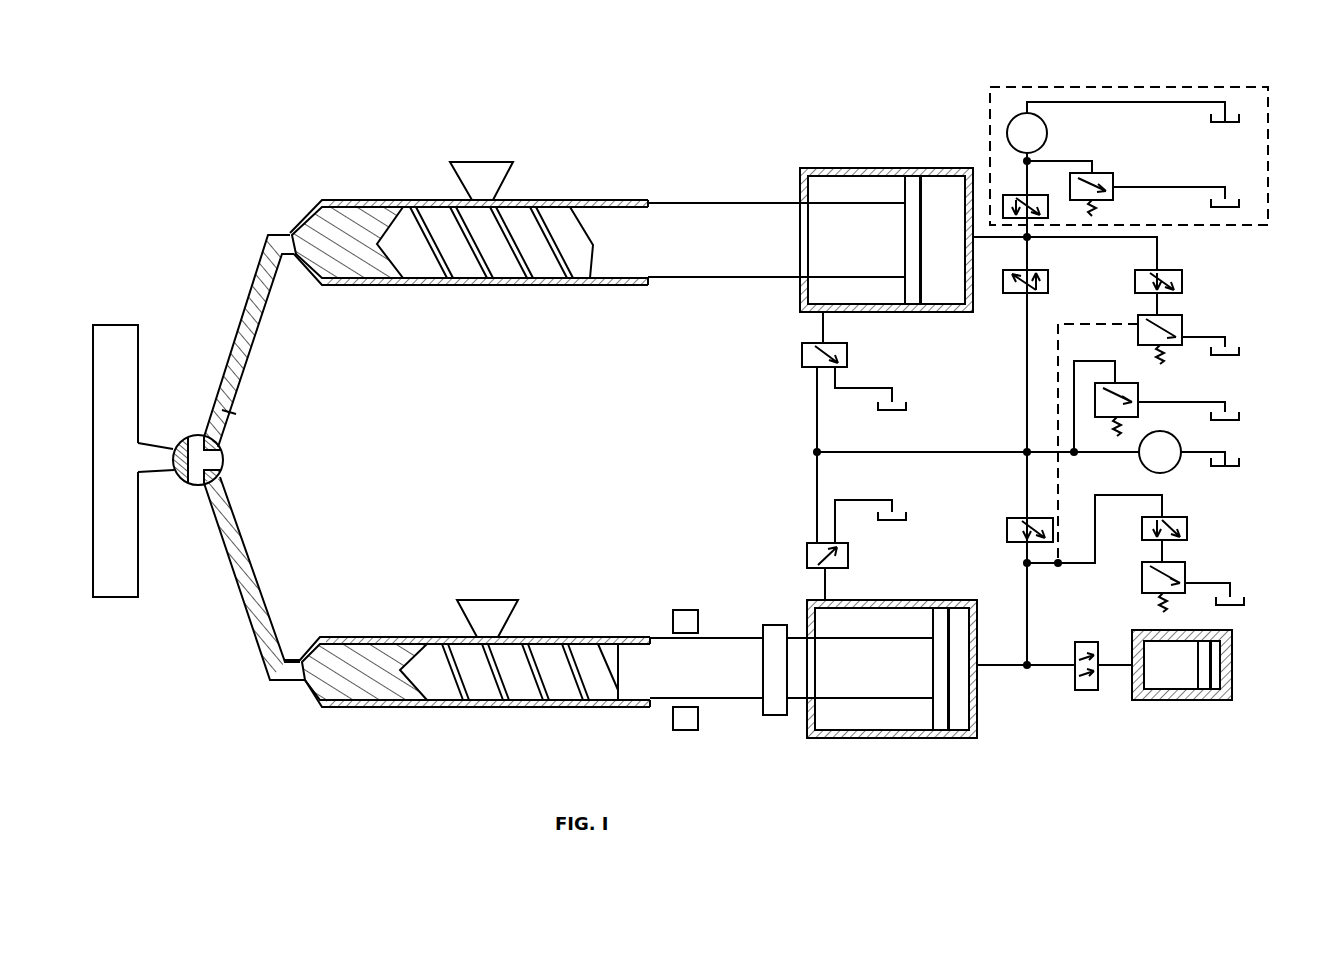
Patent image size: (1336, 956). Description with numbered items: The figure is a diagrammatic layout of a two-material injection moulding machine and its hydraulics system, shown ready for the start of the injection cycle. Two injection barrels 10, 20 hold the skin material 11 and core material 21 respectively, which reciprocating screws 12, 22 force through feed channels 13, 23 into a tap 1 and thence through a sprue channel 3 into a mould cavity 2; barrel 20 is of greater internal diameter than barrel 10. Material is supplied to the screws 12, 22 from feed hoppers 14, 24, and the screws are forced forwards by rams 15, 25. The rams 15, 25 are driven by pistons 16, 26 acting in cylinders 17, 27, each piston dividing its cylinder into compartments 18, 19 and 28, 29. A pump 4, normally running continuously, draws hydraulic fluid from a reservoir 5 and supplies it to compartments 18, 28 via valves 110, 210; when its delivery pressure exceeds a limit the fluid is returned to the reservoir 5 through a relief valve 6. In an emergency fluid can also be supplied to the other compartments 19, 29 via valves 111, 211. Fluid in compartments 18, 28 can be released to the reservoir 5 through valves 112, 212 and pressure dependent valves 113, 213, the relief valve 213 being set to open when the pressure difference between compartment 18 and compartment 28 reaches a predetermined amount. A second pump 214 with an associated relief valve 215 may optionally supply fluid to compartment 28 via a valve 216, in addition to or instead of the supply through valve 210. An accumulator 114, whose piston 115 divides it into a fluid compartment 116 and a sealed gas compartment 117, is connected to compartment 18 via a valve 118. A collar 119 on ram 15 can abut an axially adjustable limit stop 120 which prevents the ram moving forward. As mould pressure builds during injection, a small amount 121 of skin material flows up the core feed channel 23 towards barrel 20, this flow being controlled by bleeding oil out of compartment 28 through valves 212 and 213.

The tap 1 is at (222, 462).
The mould cavity 2 is at (138, 353).
The sprue channel 3 is at (152, 445).
The pump 4 is at (1146, 468).
The reservoir 5 is at (1239, 352).
The relief valve 6 is at (1138, 388).
The injection barrel 10 is at (380, 637).
The skin material 11 is at (330, 685).
The reciprocating screw 12 is at (512, 686).
The feed channel 13 is at (254, 562).
The feed hopper 14 is at (496, 606).
The ram 15 is at (739, 672).
The piston 16 is at (942, 718).
The cylinder 17 is at (887, 738).
The compartment 18 is at (960, 708).
The compartment 19 is at (823, 716).
The injection barrel 20 is at (372, 200).
The core material 21 is at (325, 262).
The reciprocating screw 22 is at (455, 262).
The feed channel 23 is at (250, 350).
The feed hopper 24 is at (483, 170).
The ram 25 is at (683, 262).
The piston 26 is at (912, 182).
The cylinder 27 is at (846, 168).
The compartment 28 is at (955, 180).
The compartment 29 is at (806, 190).
The valve 110 is at (1007, 530).
The valve 111 is at (807, 557).
The valve 112 is at (1187, 528).
The pressure dependent valve 113 is at (1185, 572).
The accumulator 114 is at (1230, 645).
The piston 115 is at (1204, 689).
The compartment 116 is at (1160, 672).
The compartment 117 is at (1213, 676).
The valve 118 is at (1086, 690).
The collar 119 is at (775, 702).
The limit stop 120 is at (680, 722).
The small amount of skin material 121 is at (230, 412).
The valve 210 is at (1048, 282).
The valve 211 is at (802, 355).
The valve 212 is at (1182, 282).
The relief valve 213 is at (1182, 326).
The second pump 214 is at (1047, 133).
The relief valve 215 is at (1113, 176).
The valve 216 is at (1048, 213).